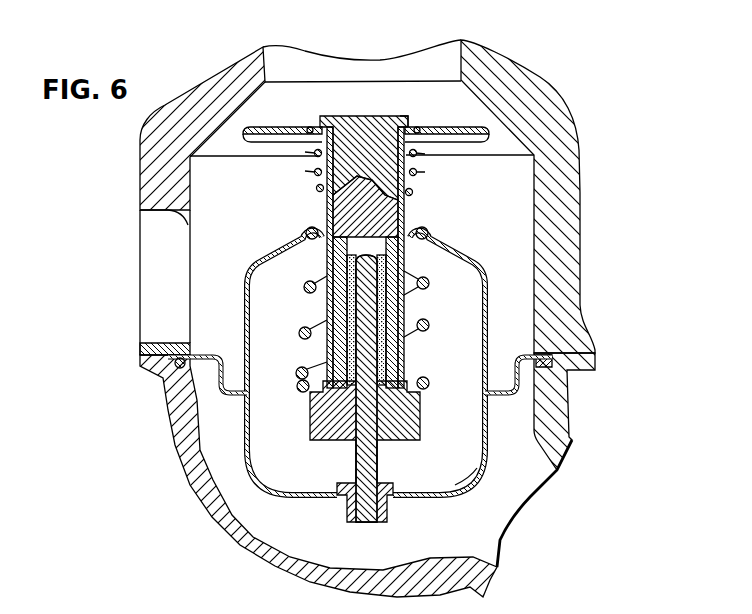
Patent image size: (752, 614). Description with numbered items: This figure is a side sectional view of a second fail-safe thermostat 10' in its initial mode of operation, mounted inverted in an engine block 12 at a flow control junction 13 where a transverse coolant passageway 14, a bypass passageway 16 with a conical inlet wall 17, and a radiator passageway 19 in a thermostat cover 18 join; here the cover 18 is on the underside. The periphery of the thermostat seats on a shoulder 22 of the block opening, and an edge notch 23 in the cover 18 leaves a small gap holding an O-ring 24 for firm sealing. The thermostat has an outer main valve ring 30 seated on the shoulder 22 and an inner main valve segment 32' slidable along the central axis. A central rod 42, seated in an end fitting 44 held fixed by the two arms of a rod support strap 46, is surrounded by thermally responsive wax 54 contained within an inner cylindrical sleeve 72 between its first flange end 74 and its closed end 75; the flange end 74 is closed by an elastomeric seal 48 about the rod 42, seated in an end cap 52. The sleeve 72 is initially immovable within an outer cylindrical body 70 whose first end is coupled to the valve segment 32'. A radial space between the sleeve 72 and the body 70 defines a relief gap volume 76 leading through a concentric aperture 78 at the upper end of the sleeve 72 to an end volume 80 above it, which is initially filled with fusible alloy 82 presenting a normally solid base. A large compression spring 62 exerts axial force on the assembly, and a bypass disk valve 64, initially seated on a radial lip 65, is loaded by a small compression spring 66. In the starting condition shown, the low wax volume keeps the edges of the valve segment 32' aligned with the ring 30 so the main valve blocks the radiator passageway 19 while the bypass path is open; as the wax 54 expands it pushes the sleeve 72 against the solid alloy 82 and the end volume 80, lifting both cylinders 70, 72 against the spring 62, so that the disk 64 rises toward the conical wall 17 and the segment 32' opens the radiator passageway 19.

The fail-safe thermostat 10' is at (568, 218).
The engine block 12 is at (547, 102).
The flow control junction 13 is at (212, 249).
The coolant passageway 14 is at (163, 285).
The bypass passageway 16 is at (292, 65).
The conical inlet wall 17 is at (510, 132).
The thermostat cover 18 is at (212, 517).
The radiator passageway 19 is at (513, 490).
The shoulder 22 is at (175, 368).
The edge notch 23 is at (163, 375).
The O-ring 24 is at (567, 380).
The outer main valve ring 30 is at (510, 377).
The inner main valve segment 32' is at (366, 363).
The central rod 42 is at (363, 460).
The end fitting 44 is at (385, 513).
The rod support strap 46 is at (467, 490).
The elastomeric seal 48 is at (333, 413).
The end cap 52 is at (397, 418).
The thermally responsive wax 54 is at (360, 343).
The large compression spring 62 is at (429, 282).
The bypass disk valve 64 is at (287, 127).
The radial lip 65 is at (408, 117).
The small compression spring 66 is at (416, 173).
The outer cylindrical body 70 is at (403, 355).
The inner cylindrical sleeve 72 is at (340, 298).
The first flange end 74 is at (428, 381).
The closed end 75 is at (390, 257).
The relief gap volume 76 is at (393, 315).
The concentric aperture 78 is at (327, 258).
The end volume 80 is at (400, 193).
The fusible alloy 82 is at (353, 212).